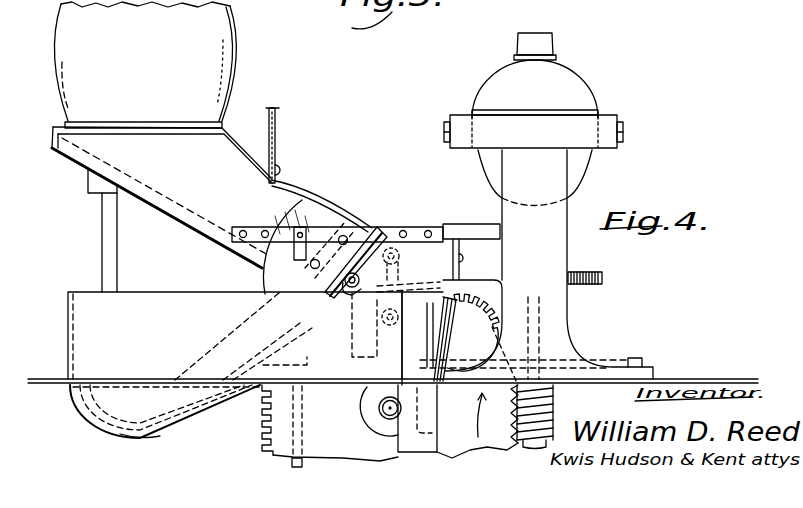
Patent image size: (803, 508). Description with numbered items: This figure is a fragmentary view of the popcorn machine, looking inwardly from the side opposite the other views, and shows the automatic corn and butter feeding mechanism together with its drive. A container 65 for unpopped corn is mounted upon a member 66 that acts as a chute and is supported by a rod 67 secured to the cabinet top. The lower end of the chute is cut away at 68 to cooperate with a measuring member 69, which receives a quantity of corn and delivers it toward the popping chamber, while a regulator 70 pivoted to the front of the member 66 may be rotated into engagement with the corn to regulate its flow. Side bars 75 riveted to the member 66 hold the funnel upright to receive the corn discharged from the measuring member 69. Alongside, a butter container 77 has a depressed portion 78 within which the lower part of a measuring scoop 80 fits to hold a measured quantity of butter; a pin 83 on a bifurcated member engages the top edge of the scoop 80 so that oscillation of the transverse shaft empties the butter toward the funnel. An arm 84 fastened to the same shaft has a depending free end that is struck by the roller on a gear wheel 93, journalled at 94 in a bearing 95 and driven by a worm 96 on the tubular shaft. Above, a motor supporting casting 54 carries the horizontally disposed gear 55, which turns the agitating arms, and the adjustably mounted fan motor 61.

The motor supporting casting 54 is at (562, 217).
The horizontally disposed gear 55 is at (605, 278).
The fan motor 61 is at (573, 85).
The container 65 is at (222, 66).
The member 66 is at (116, 157).
The rod 67 is at (104, 243).
The cut away portion 68 is at (299, 208).
The measuring member 69 is at (321, 213).
The regulator 70 is at (277, 111).
The side bars 75 is at (414, 234).
The butter container 77 is at (158, 298).
The depressed portion 78 is at (169, 437).
The measuring scoop 80 is at (113, 403).
The pin 83 is at (350, 250).
The arm 84 is at (263, 275).
The gear wheel 93 is at (492, 417).
The journal 94 is at (382, 410).
The bearing 95 is at (385, 426).
The worm 96 is at (551, 419).